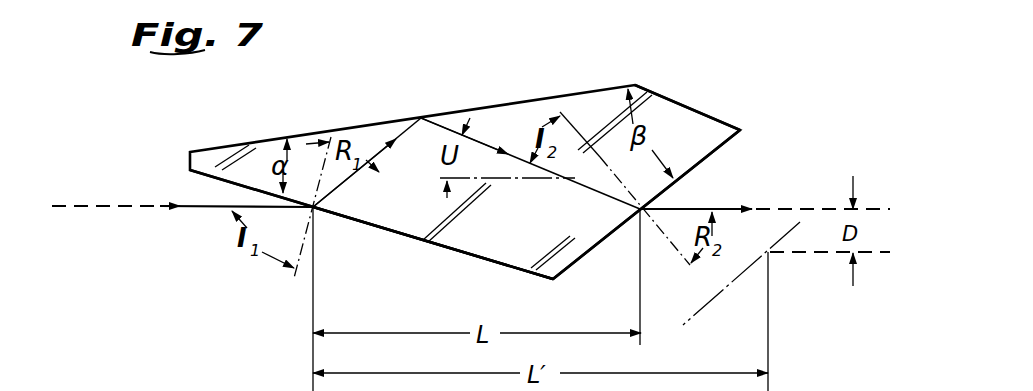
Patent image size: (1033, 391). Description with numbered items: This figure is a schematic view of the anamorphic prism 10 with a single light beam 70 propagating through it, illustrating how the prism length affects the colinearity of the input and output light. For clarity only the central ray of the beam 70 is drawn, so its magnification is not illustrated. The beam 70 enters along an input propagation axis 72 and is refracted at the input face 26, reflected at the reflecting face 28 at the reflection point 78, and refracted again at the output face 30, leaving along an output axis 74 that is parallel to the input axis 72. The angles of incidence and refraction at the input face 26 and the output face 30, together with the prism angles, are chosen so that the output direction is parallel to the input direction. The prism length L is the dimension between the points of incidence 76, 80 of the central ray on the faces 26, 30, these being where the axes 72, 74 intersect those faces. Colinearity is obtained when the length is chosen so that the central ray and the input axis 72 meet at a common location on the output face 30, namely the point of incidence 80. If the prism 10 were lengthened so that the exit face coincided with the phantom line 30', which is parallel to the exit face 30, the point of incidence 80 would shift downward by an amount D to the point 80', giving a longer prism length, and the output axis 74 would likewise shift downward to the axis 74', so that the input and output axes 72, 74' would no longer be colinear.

The prism 10 is at (379, 112).
The input face 26 is at (434, 246).
The reflecting face 28 is at (525, 100).
The output face 30 is at (646, 213).
The light beam 70 is at (200, 208).
The input propagation axis 72 is at (60, 205).
The output axis 74 is at (765, 181).
The shifted output axis 74' is at (837, 280).
The point of incidence 76 is at (325, 207).
The reflection point 78 is at (422, 117).
The point of incidence 80 is at (596, 274).
The shifted point 80' is at (792, 321).
The phantom line 30' is at (741, 281).